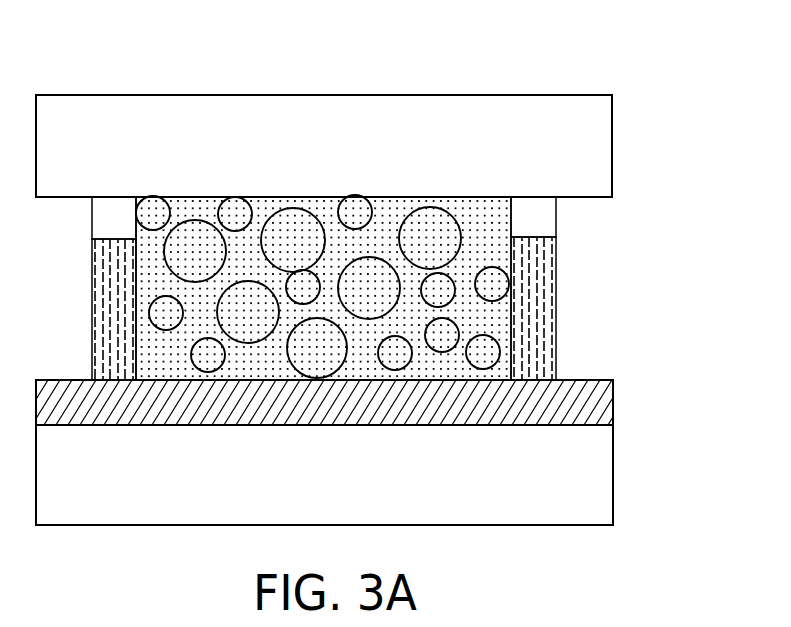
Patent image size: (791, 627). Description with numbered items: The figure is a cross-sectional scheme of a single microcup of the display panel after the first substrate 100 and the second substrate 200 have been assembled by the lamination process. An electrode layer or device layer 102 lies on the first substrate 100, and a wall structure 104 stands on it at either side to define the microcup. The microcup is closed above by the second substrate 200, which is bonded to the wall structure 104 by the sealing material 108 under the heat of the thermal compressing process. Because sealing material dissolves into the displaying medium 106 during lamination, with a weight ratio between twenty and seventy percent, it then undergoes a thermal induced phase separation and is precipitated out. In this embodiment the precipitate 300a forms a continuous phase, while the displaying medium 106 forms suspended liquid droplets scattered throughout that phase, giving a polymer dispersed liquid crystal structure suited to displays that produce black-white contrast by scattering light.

The first substrate 100 is at (566, 473).
The electrode layer or device layer 102 is at (576, 403).
The wall structure 104 is at (532, 312).
The displaying medium 106 is at (428, 242).
The sealing material 108 is at (530, 215).
The second substrate 200 is at (583, 141).
The precipitate 300a is at (483, 218).